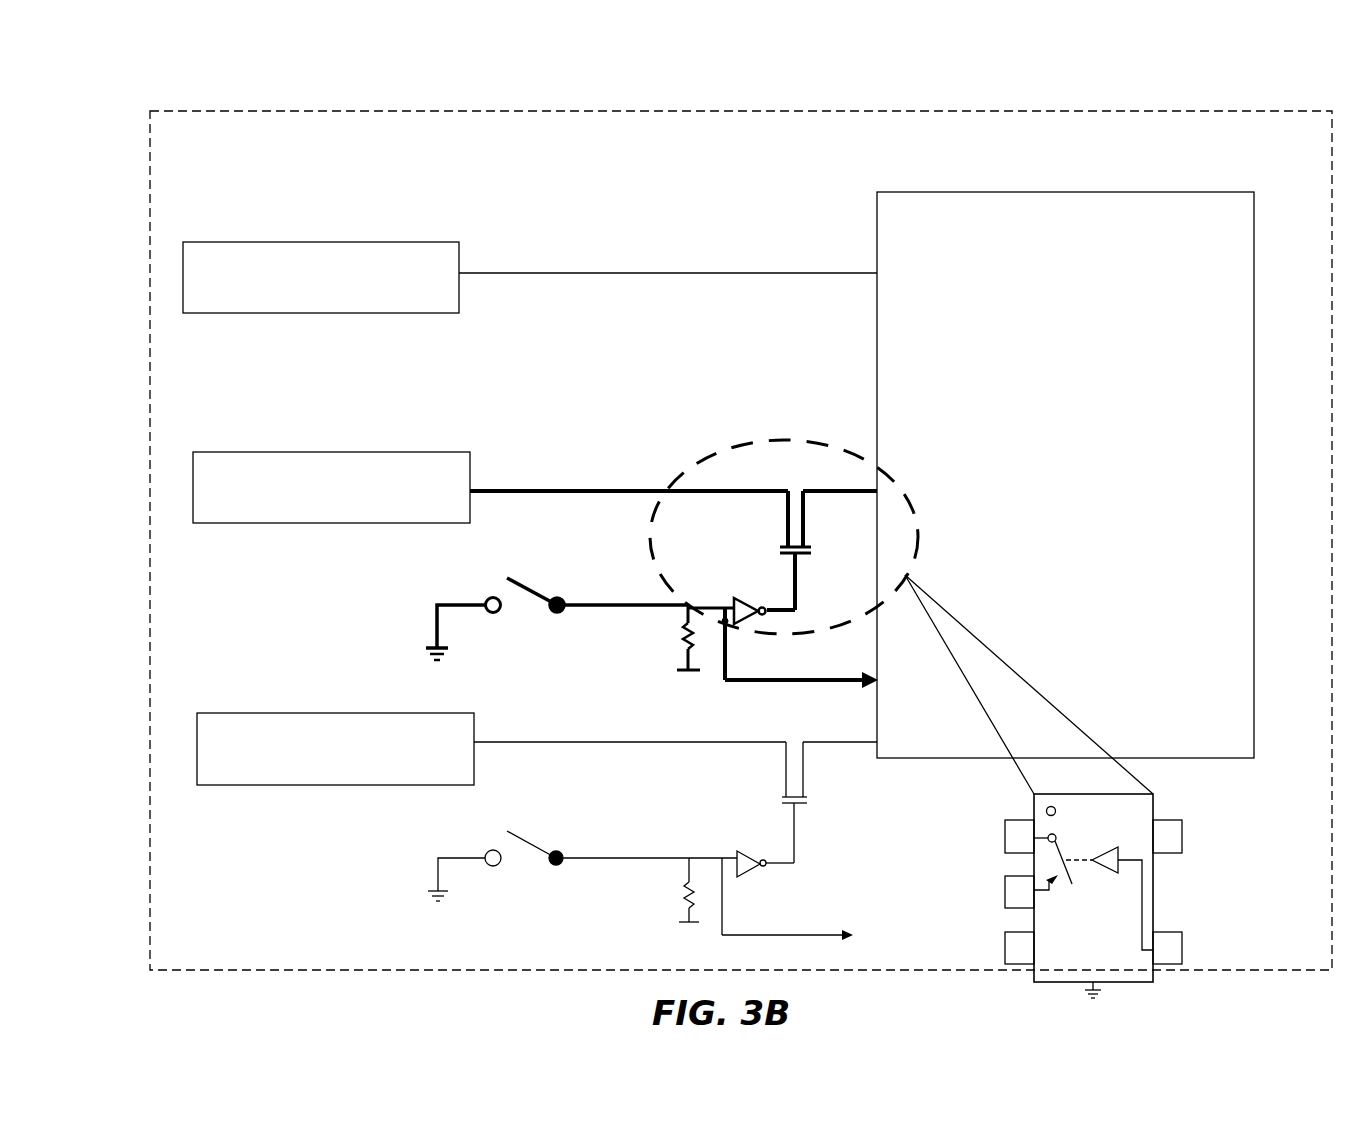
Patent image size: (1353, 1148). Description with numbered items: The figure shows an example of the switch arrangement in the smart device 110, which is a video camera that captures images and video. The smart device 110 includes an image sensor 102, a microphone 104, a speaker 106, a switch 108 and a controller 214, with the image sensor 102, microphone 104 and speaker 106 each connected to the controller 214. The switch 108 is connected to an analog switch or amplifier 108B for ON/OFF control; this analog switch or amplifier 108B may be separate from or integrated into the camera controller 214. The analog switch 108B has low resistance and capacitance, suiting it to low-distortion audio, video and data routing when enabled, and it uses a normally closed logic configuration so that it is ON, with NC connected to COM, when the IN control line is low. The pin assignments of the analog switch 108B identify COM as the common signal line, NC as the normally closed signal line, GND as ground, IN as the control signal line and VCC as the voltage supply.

The smart device 110 is at (99, 150).
The image sensor 102 is at (530, 277).
The microphone 104 is at (331, 487).
The speaker 106 is at (335, 749).
The switch 108 is at (581, 723).
The analog switch or amplifier 108B is at (787, 437).
The controller 214 is at (1065, 475).